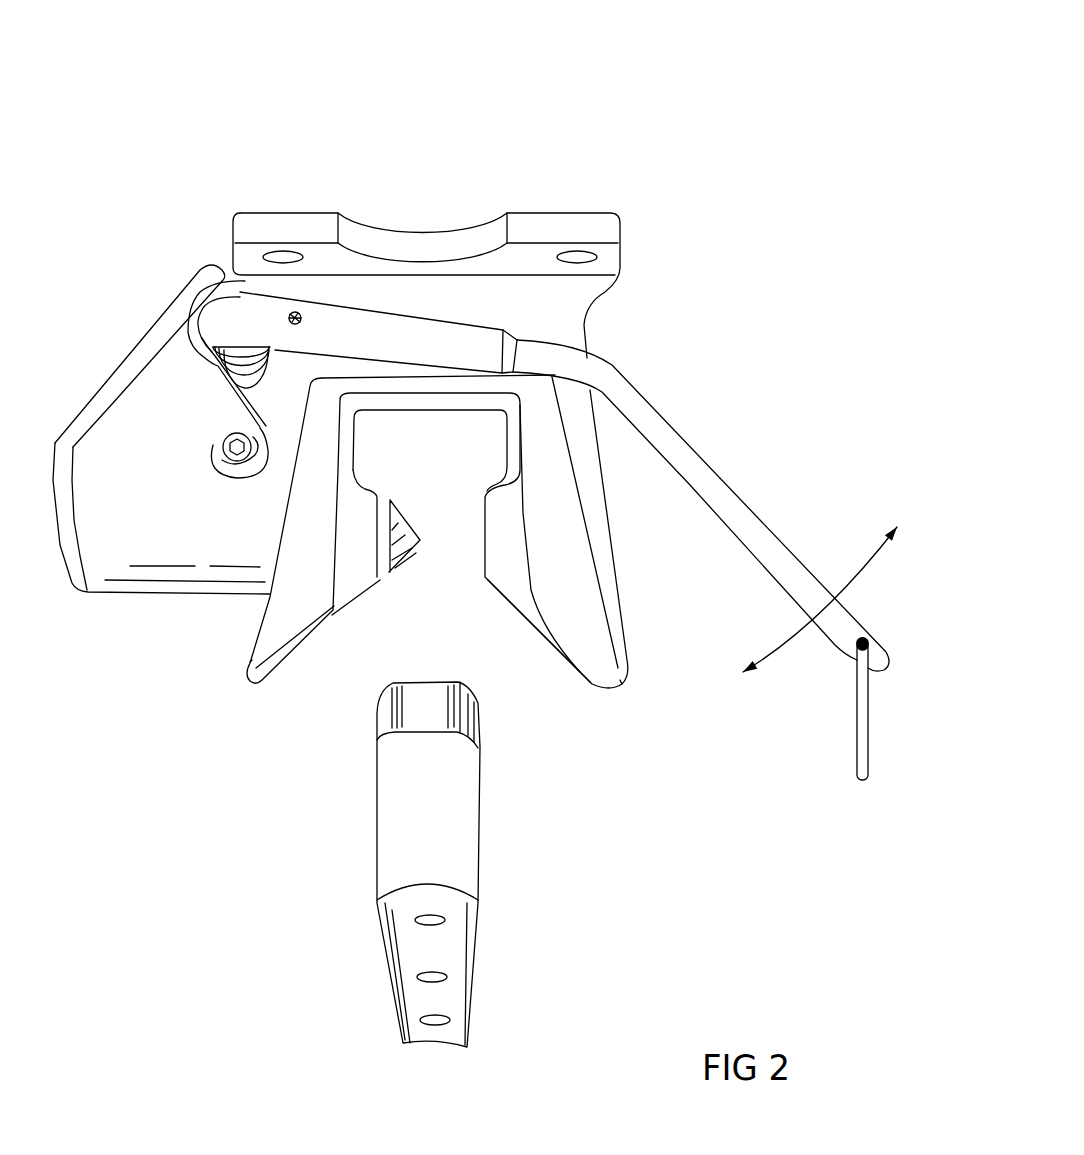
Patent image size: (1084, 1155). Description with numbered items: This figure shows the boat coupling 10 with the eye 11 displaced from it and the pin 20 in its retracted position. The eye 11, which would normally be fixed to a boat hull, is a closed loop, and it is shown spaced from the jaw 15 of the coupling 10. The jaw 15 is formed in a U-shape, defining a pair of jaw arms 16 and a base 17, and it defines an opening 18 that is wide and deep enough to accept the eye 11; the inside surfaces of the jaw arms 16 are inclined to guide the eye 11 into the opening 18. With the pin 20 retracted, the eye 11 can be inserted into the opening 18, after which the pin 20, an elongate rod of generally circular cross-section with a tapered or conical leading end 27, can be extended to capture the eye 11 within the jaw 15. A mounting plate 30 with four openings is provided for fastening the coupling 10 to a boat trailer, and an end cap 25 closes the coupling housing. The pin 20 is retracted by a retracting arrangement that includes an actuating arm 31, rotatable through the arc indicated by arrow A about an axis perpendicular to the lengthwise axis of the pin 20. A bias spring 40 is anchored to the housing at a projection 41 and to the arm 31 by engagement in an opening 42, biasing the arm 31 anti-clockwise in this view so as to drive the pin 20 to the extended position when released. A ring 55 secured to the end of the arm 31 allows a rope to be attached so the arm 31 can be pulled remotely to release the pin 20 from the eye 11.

The boat coupling 10 is at (223, 118).
The eye 11 is at (400, 822).
The jaw 15 is at (536, 632).
The jaw arms 16 is at (254, 678).
The base 17 is at (412, 410).
The opening 18 is at (453, 442).
The pin 20 is at (378, 577).
The end cap 25 is at (140, 352).
The leading end 27 is at (420, 537).
The mounting plate 30 is at (567, 228).
The actuating arm 31 is at (727, 502).
The bias spring 40 is at (187, 316).
The projection 41 is at (237, 445).
The opening 42 is at (302, 324).
The ring 55 is at (858, 757).